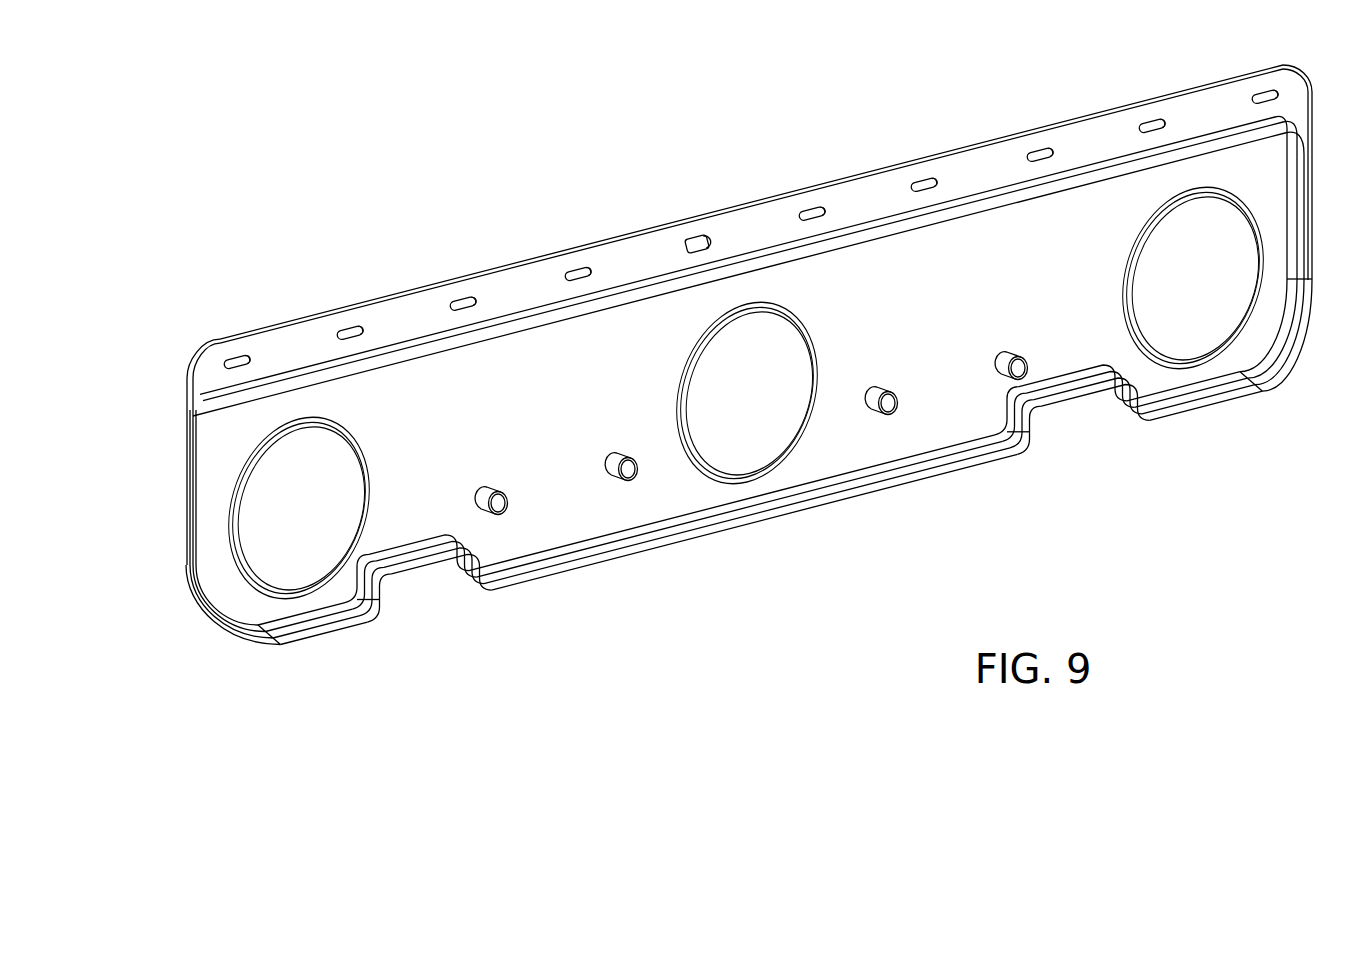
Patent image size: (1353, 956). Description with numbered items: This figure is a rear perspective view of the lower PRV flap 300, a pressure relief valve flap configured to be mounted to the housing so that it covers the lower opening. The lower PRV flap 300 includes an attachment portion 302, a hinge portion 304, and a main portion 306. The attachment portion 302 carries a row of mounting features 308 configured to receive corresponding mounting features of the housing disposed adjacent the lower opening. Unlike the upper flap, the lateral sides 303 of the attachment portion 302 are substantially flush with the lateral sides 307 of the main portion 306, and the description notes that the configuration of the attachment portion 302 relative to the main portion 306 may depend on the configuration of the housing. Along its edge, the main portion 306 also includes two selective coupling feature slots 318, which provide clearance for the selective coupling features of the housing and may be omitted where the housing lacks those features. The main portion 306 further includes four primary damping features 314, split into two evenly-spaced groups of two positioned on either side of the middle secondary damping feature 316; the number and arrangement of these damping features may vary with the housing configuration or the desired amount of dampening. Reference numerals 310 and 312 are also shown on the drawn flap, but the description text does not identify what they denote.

The lower PRV flap 300 is at (571, 144).
The attachment portion 302 is at (514, 278).
The lateral sides 303 is at (190, 398).
The hinge portion 304 is at (312, 377).
The main portion 306 is at (524, 396).
The lateral sides 307 is at (187, 496).
The mounting features 308 is at (898, 177).
The side flange 310 is at (192, 552).
The bottom flange 312 is at (833, 407).
The primary damping features 314 is at (507, 505).
The secondary damping feature 316 is at (357, 443).
The selective coupling feature slots 318 is at (441, 600).